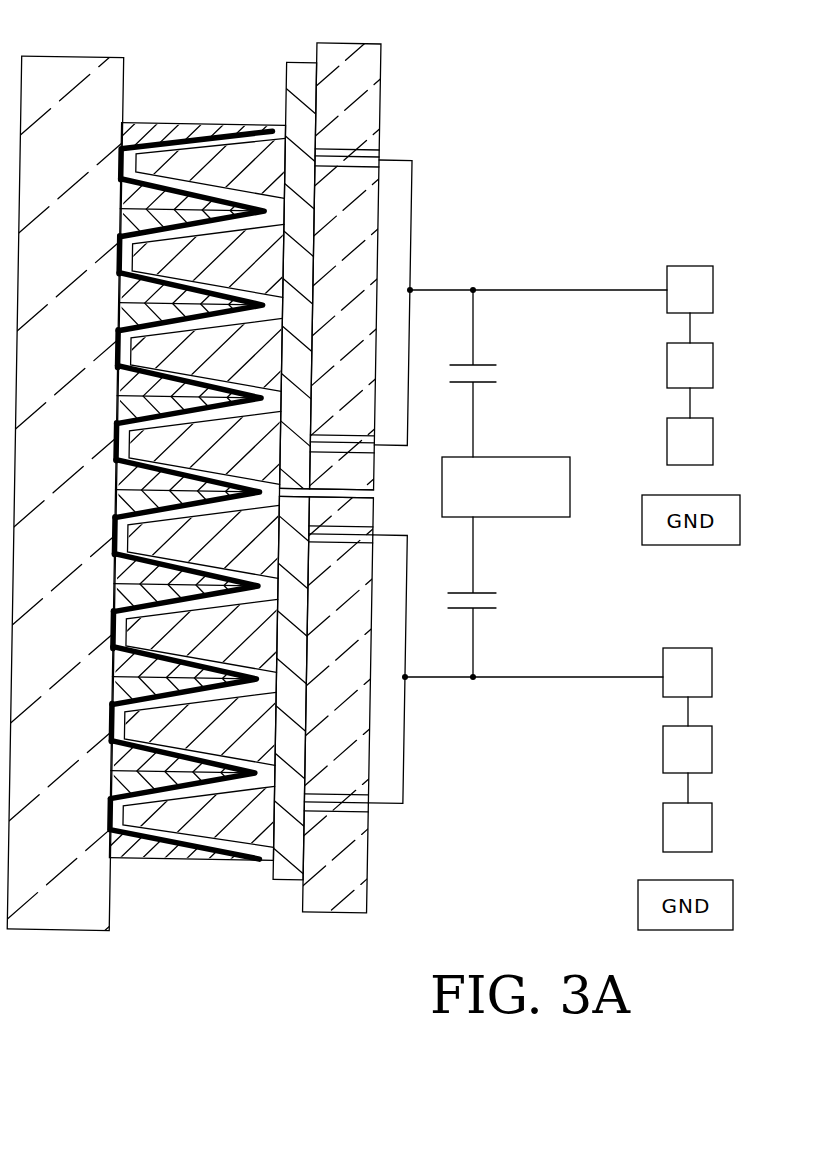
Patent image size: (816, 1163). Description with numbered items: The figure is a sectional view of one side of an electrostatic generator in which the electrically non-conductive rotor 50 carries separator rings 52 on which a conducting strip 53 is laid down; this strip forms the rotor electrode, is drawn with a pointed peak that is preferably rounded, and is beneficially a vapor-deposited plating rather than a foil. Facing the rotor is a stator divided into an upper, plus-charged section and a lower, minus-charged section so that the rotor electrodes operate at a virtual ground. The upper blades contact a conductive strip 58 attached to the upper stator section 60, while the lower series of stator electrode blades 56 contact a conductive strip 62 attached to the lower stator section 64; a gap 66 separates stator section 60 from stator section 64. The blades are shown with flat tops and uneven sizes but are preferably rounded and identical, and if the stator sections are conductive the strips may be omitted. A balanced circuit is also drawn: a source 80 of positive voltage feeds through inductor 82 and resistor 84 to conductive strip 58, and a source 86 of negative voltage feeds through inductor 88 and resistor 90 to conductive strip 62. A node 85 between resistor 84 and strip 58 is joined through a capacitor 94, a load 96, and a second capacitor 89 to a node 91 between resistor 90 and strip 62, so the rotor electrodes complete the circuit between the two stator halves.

The rotor 50 is at (49, 57).
The separator rings 52 is at (160, 125).
The conducting strip 53 is at (205, 141).
The lower series of stator electrode blades 56 is at (258, 177).
The conductive strip 58 is at (292, 63).
The stator section 60 is at (350, 43).
The conductive strip 62 is at (282, 882).
The stator section 64 is at (332, 912).
The gap 66 is at (363, 496).
The source of positive voltage 80 is at (667, 447).
The inductor 82 is at (667, 367).
The resistor 84 is at (687, 266).
The node 85 is at (473, 289).
The source of negative voltage 86 is at (663, 828).
The inductor 88 is at (663, 751).
The capacitor 89 is at (473, 594).
The resistor 90 is at (688, 648).
The node 91 is at (473, 680).
The capacitor 94 is at (481, 365).
The load 96 is at (511, 457).